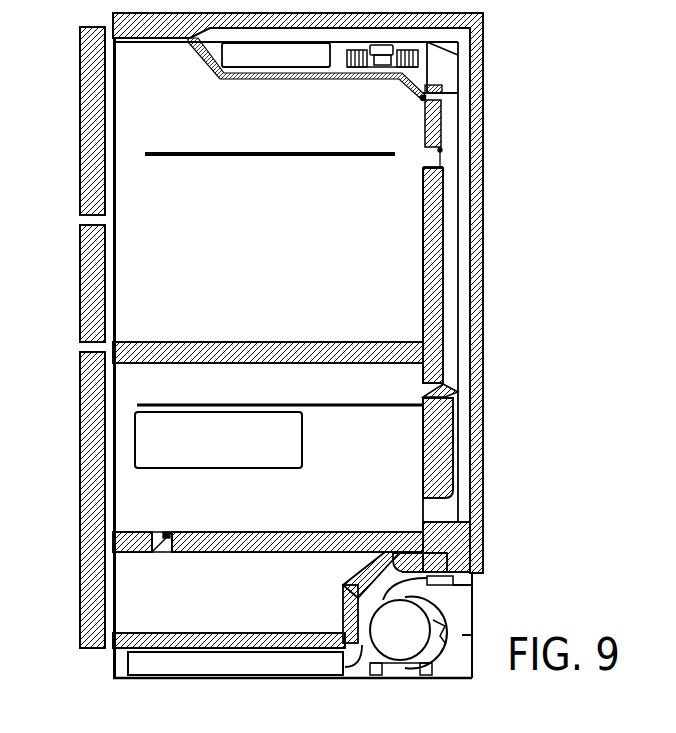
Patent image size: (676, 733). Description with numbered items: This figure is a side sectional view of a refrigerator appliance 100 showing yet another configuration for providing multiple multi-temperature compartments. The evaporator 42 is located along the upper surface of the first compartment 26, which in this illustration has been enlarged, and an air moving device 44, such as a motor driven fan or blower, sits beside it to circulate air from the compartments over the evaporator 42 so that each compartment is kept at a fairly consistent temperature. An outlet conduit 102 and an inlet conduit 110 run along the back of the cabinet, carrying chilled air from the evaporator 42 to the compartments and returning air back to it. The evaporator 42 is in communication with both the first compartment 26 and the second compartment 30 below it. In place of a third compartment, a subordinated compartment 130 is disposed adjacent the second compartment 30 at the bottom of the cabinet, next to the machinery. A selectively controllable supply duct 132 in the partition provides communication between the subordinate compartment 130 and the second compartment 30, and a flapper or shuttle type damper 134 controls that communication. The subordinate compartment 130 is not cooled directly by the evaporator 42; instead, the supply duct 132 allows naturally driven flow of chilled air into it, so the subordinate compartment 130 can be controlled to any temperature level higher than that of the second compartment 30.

The refrigerator cabinet 100 is at (492, 21).
The outlet conduit 102 is at (448, 122).
The inlet conduit 110 is at (483, 293).
The first interior compartment 26 is at (198, 126).
The evaporator 42 is at (260, 58).
The air moving device 44 is at (363, 67).
The second interior compartment 30 is at (191, 501).
The supply duct 132 is at (172, 532).
The damper 134 is at (163, 553).
The subordinated compartment 130 is at (264, 609).